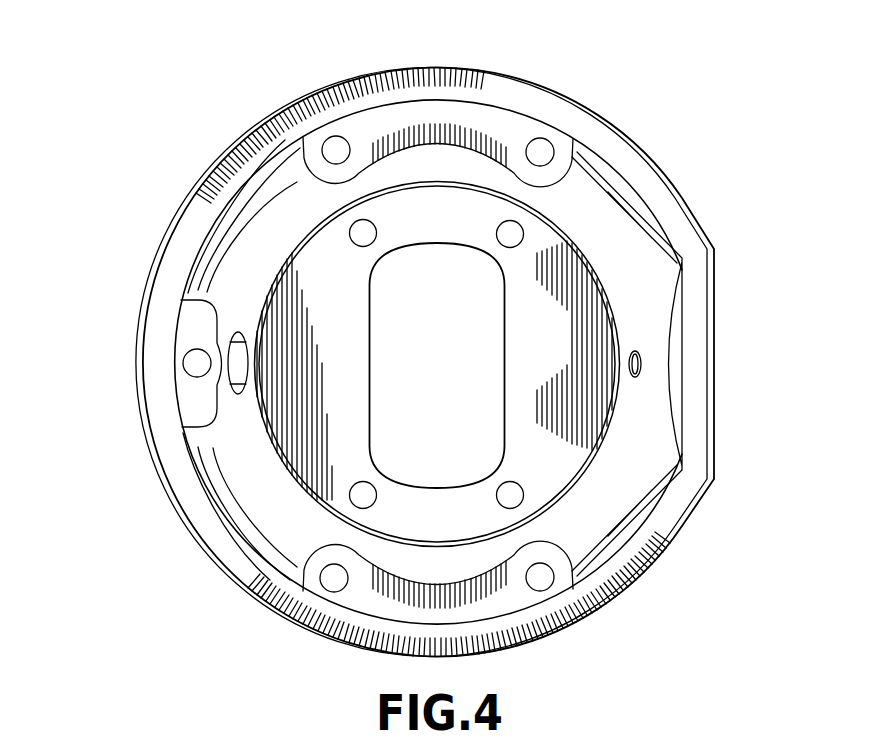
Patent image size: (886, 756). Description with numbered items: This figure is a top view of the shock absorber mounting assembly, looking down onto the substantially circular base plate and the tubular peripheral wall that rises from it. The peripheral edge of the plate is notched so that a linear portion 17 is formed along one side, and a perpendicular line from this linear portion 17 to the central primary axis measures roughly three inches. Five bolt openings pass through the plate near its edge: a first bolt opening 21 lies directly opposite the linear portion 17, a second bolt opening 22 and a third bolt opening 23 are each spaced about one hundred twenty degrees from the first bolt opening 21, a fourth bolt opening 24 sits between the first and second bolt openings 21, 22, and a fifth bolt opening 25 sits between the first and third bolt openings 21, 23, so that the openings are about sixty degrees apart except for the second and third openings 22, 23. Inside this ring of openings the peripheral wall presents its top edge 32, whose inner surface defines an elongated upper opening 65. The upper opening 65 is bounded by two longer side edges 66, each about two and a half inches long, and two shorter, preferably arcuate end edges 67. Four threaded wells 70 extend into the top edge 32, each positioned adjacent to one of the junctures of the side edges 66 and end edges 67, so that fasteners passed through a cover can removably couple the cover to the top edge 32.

The linear portion 17 is at (717, 362).
The first bolt opening 21 is at (183, 363).
The second bolt opening 22 is at (543, 138).
The third bolt opening 23 is at (554, 578).
The fourth bolt opening 24 is at (336, 136).
The fifth bolt opening 25 is at (334, 592).
The top edge 32 is at (600, 456).
The upper opening 65 is at (505, 285).
The side edges 66 is at (503, 375).
The end edges 67 is at (467, 243).
The threaded wells 70 is at (349, 233).